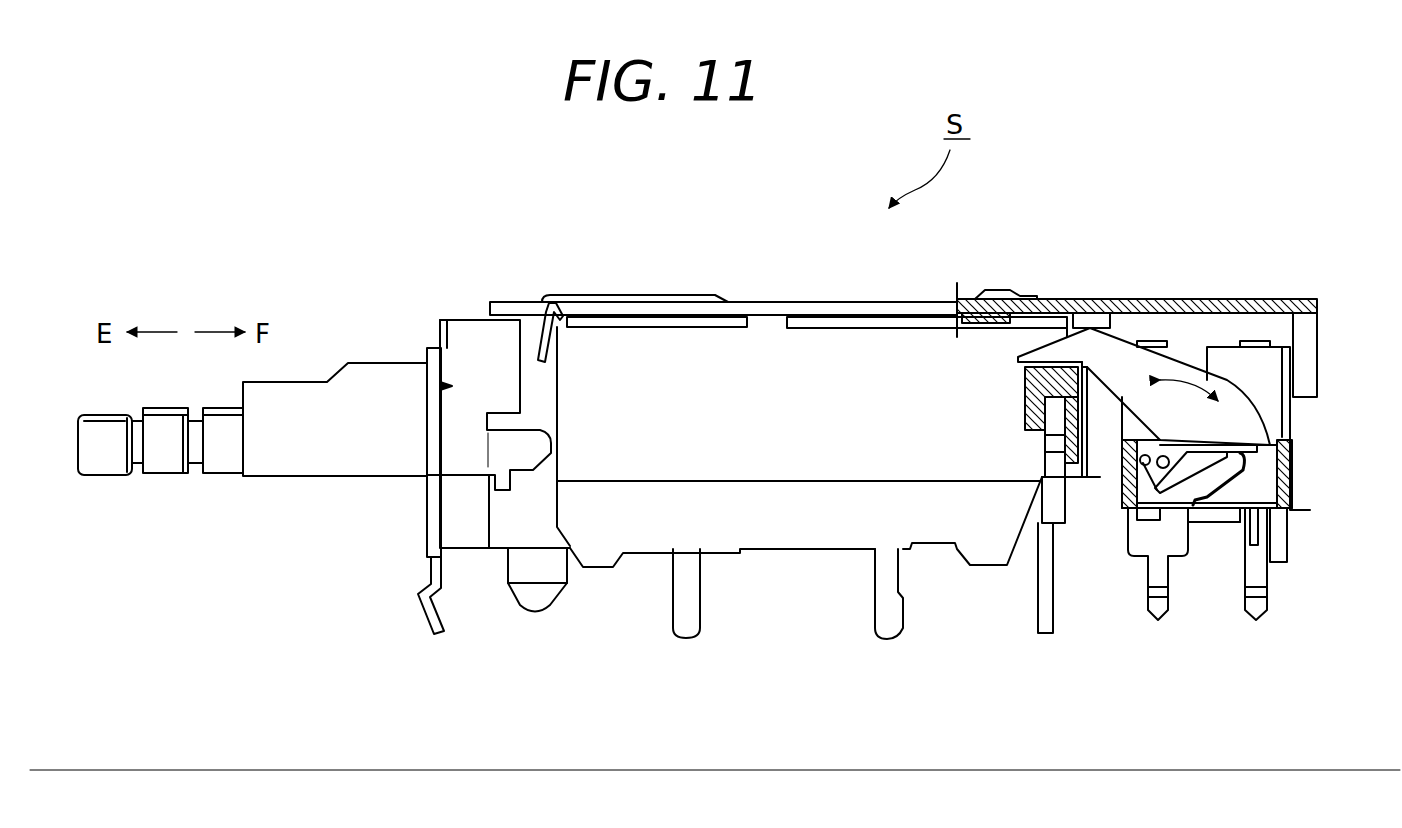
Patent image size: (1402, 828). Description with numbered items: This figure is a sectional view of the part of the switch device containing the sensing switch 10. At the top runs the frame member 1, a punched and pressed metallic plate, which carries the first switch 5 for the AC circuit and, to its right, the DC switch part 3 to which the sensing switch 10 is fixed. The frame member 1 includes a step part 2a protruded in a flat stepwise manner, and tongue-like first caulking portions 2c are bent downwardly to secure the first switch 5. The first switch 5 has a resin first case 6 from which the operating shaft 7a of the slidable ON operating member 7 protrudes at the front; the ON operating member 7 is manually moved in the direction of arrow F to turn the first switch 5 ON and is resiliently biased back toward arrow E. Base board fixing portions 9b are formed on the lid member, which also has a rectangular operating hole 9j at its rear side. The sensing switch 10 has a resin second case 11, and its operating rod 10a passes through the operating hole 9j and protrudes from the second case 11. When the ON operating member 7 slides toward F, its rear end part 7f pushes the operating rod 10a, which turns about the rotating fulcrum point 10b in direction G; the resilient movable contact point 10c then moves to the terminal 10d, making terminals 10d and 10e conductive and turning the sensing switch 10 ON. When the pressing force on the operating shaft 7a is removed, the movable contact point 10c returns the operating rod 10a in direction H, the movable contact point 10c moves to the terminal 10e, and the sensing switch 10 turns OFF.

The frame member 1 is at (764, 290).
The step part 2a is at (583, 293).
The first caulking portion 2c is at (530, 347).
The DC switch part 3 is at (1220, 290).
The first switch 5 is at (680, 436).
The first case 6 is at (808, 442).
The ON operating member 7 is at (304, 442).
The operating shaft 7a is at (158, 462).
The rear end part 7f is at (1030, 428).
The base board fixing portion 9b is at (422, 597).
The operating hole 9j is at (1050, 322).
The sensing switch 10 is at (1300, 480).
The operating rod 10a is at (1112, 350).
The rotating fulcrum point 10b is at (1122, 480).
The movable contact point 10c is at (1233, 484).
The terminal 10d is at (1165, 615).
The terminal 10e is at (1260, 617).
The second case 11 is at (1297, 418).